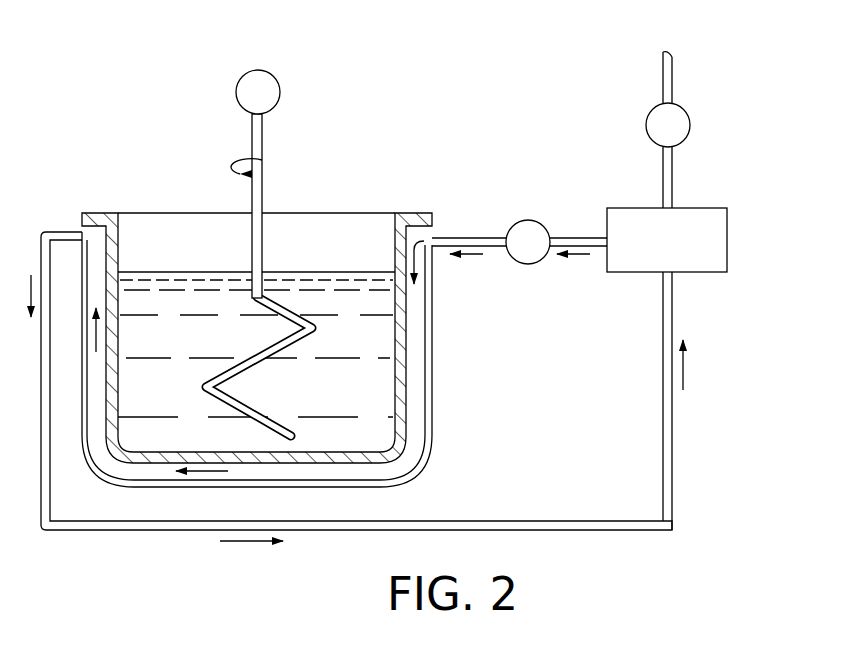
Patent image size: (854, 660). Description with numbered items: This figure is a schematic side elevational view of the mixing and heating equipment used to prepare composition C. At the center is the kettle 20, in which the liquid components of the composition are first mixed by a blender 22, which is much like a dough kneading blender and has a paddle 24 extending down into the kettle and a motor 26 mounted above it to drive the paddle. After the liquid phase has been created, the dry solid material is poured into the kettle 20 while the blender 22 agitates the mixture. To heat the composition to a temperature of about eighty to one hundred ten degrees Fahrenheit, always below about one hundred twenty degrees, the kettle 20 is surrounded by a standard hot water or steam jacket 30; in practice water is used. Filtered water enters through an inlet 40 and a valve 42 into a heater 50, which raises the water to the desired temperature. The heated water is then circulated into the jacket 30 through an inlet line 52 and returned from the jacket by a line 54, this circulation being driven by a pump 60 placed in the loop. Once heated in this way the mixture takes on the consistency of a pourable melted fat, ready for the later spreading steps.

The kettle 20 is at (404, 214).
The blender 22 is at (271, 139).
The paddle 24 is at (293, 341).
The motor 26 is at (274, 82).
The jacket 30 is at (432, 392).
The inlet 40 is at (673, 80).
The valve 42 is at (690, 118).
The heater 50 is at (728, 228).
The inlet line 52 is at (468, 235).
The line 54 is at (475, 521).
The pump 60 is at (538, 262).